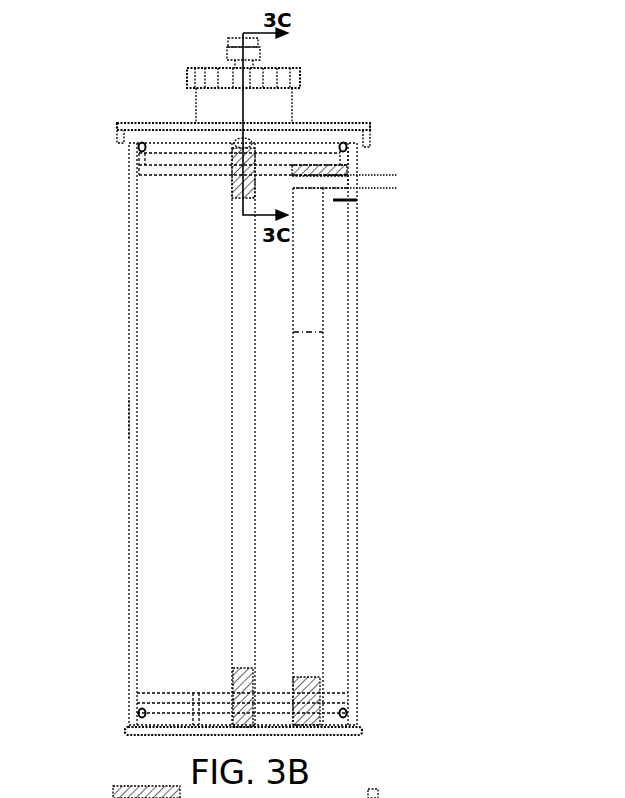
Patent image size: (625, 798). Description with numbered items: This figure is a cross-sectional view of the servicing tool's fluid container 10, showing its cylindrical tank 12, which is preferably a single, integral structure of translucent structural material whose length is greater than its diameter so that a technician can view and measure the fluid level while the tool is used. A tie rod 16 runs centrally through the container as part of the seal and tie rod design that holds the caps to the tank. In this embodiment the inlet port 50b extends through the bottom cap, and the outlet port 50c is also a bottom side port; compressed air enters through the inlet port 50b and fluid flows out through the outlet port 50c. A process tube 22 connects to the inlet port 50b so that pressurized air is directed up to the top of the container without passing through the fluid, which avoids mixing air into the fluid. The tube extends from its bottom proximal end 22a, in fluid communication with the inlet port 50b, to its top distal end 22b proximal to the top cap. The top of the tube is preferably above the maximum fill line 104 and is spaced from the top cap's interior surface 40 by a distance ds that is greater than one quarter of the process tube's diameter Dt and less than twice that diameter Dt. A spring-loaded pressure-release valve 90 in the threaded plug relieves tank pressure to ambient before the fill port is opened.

The fluid container 10 is at (112, 99).
The cylindrical tank 12 is at (131, 422).
The tie rod 16 is at (232, 372).
The process tube 22 is at (312, 368).
The bottom proximal end 22a is at (315, 700).
The top distal end 22b is at (307, 190).
The interior surface 40 is at (185, 175).
The inlet port 50b is at (315, 723).
The outlet port 50c is at (177, 723).
The pressure-release valve 90 is at (95, 797).
The maximum fill line 104 is at (345, 201).
The spacing distance ds is at (378, 183).
The process tube diameter Dt is at (323, 332).